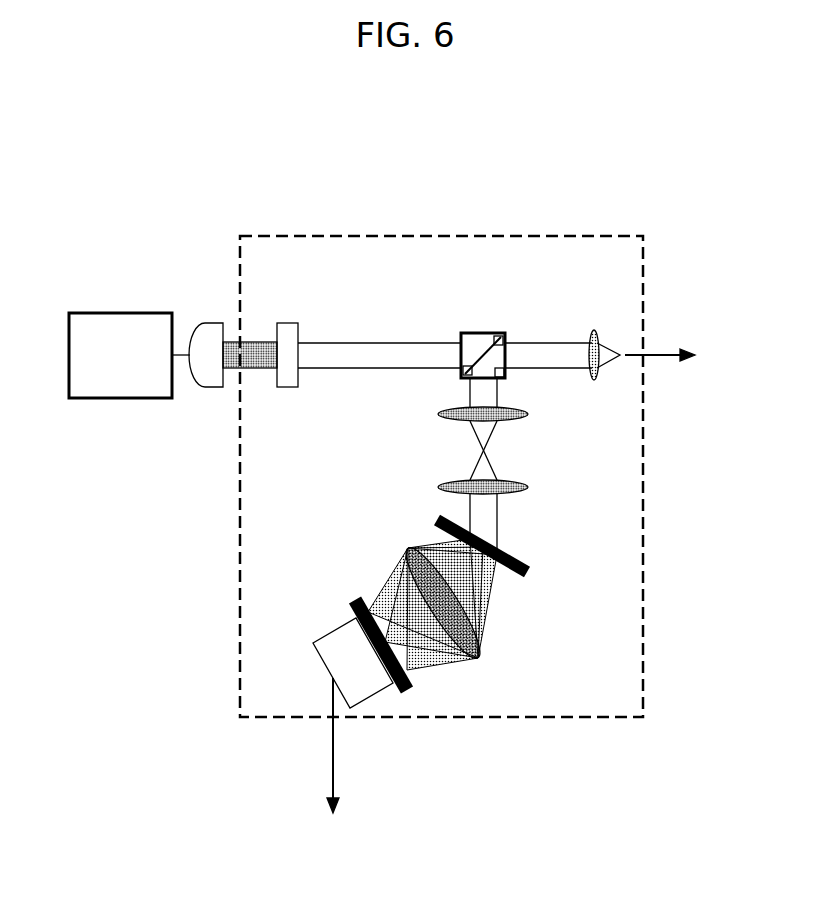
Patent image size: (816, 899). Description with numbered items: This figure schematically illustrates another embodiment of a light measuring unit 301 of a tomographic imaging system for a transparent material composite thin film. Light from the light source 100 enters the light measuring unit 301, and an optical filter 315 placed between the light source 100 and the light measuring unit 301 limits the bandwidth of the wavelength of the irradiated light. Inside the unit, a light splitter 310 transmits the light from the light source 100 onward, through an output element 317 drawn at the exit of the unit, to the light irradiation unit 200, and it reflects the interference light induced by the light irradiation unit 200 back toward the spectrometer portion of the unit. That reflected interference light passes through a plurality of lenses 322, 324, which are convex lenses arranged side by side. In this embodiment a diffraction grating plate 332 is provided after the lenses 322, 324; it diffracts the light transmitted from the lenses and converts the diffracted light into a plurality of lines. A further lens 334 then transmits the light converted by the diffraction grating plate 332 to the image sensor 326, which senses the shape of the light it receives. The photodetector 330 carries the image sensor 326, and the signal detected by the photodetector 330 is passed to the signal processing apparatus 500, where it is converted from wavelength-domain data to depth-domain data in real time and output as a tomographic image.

The light source 100 is at (117, 313).
The light irradiation unit 200 is at (676, 356).
The light measuring unit 301 is at (403, 174).
The light splitter 310 is at (484, 333).
The optical filter 315 is at (298, 328).
The focusing lens 317 is at (592, 330).
The lens 322 is at (445, 418).
The lens 324 is at (445, 483).
The image sensor 326 is at (345, 600).
The photodetector 330 is at (333, 632).
The diffraction grating plate 332 is at (530, 570).
The lens 334 is at (482, 656).
The signal processing apparatus 500 is at (335, 760).